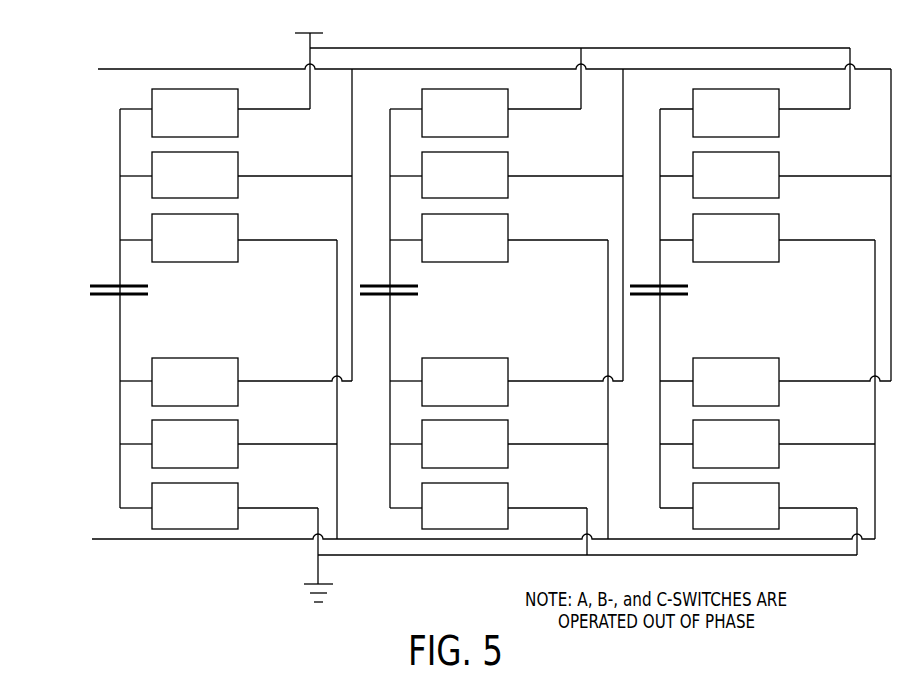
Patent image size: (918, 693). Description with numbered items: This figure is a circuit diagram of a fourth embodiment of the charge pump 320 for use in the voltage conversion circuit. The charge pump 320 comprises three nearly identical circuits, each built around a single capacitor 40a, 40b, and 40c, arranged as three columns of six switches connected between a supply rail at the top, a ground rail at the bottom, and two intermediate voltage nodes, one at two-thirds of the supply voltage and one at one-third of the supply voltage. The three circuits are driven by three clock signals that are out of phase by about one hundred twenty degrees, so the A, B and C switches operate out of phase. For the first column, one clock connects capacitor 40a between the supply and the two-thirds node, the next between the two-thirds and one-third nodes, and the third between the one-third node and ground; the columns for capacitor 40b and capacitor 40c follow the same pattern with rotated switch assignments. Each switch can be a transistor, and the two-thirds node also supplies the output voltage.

The charge pump 320 is at (106, 322).
The capacitor 40a is at (134, 296).
The capacitor 40b is at (404, 296).
The capacitor 40c is at (674, 296).